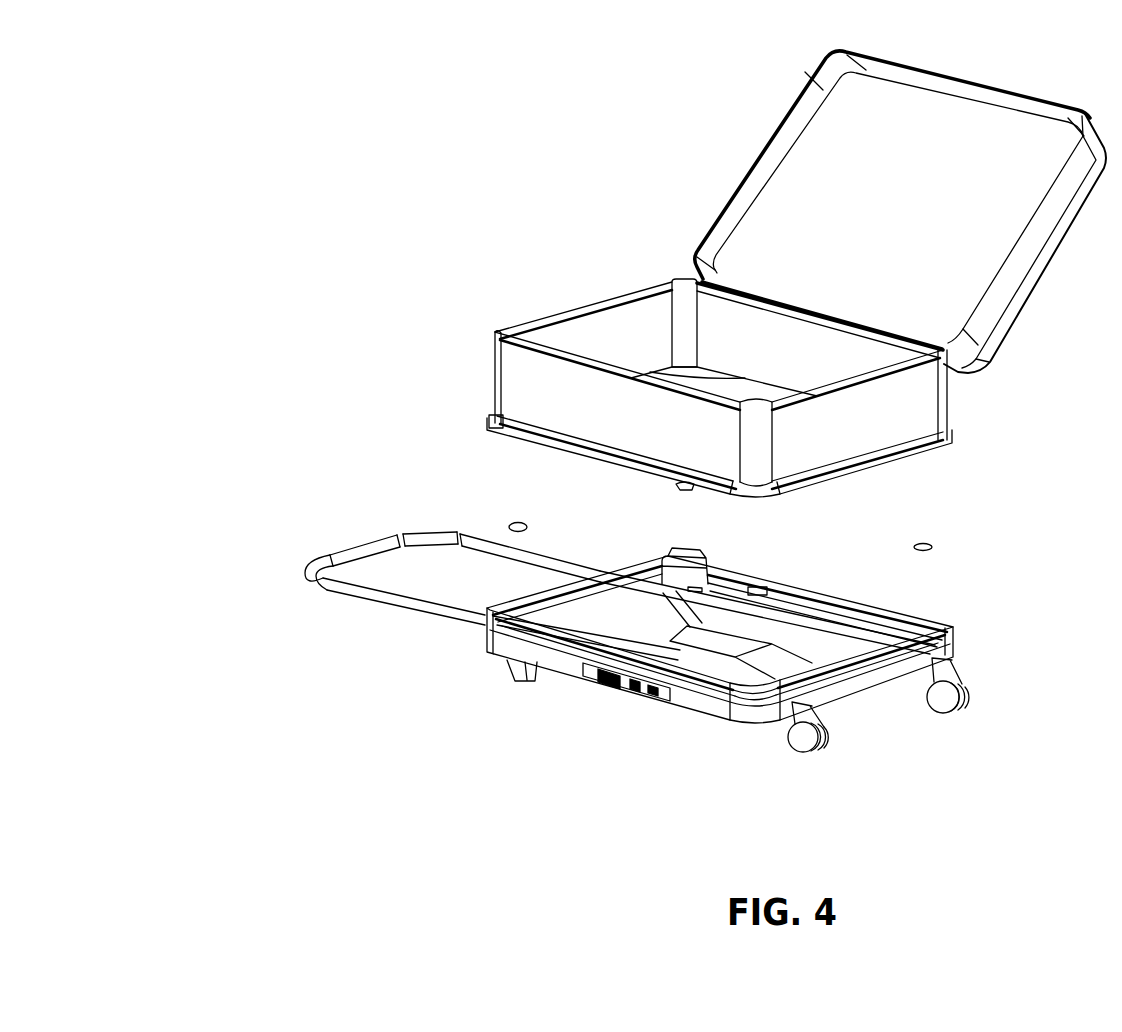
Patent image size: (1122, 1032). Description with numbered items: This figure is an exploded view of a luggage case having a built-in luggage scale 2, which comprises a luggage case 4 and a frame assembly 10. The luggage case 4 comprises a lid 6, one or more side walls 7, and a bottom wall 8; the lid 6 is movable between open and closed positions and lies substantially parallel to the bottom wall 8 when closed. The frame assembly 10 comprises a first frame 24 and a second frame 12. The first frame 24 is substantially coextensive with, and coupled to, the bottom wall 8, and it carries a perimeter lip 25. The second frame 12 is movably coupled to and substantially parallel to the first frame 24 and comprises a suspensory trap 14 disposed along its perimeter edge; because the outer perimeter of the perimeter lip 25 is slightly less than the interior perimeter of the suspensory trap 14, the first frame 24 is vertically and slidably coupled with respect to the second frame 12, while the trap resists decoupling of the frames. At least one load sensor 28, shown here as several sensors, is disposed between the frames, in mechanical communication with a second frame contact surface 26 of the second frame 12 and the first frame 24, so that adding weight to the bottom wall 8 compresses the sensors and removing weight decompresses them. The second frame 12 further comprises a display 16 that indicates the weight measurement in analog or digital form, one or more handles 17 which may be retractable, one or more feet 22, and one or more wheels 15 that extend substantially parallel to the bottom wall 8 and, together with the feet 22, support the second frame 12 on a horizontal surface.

The luggage case having a built-in luggage scale 2 is at (286, 284).
The luggage case 4 is at (650, 232).
The lid 6 is at (850, 210).
The side wall 7 is at (888, 408).
The bottom wall 8 is at (720, 383).
The frame assembly 10 is at (980, 433).
The second frame 12 is at (708, 700).
The suspensory trap 14 is at (732, 714).
The wheel 15 is at (978, 688).
The display 16 is at (612, 693).
The handle 17 is at (322, 588).
The foot 22 is at (511, 683).
The first frame 24 is at (510, 433).
The perimeter lip 25 is at (487, 414).
The second frame contact surface 26 is at (722, 563).
The load sensor 28 is at (508, 526).